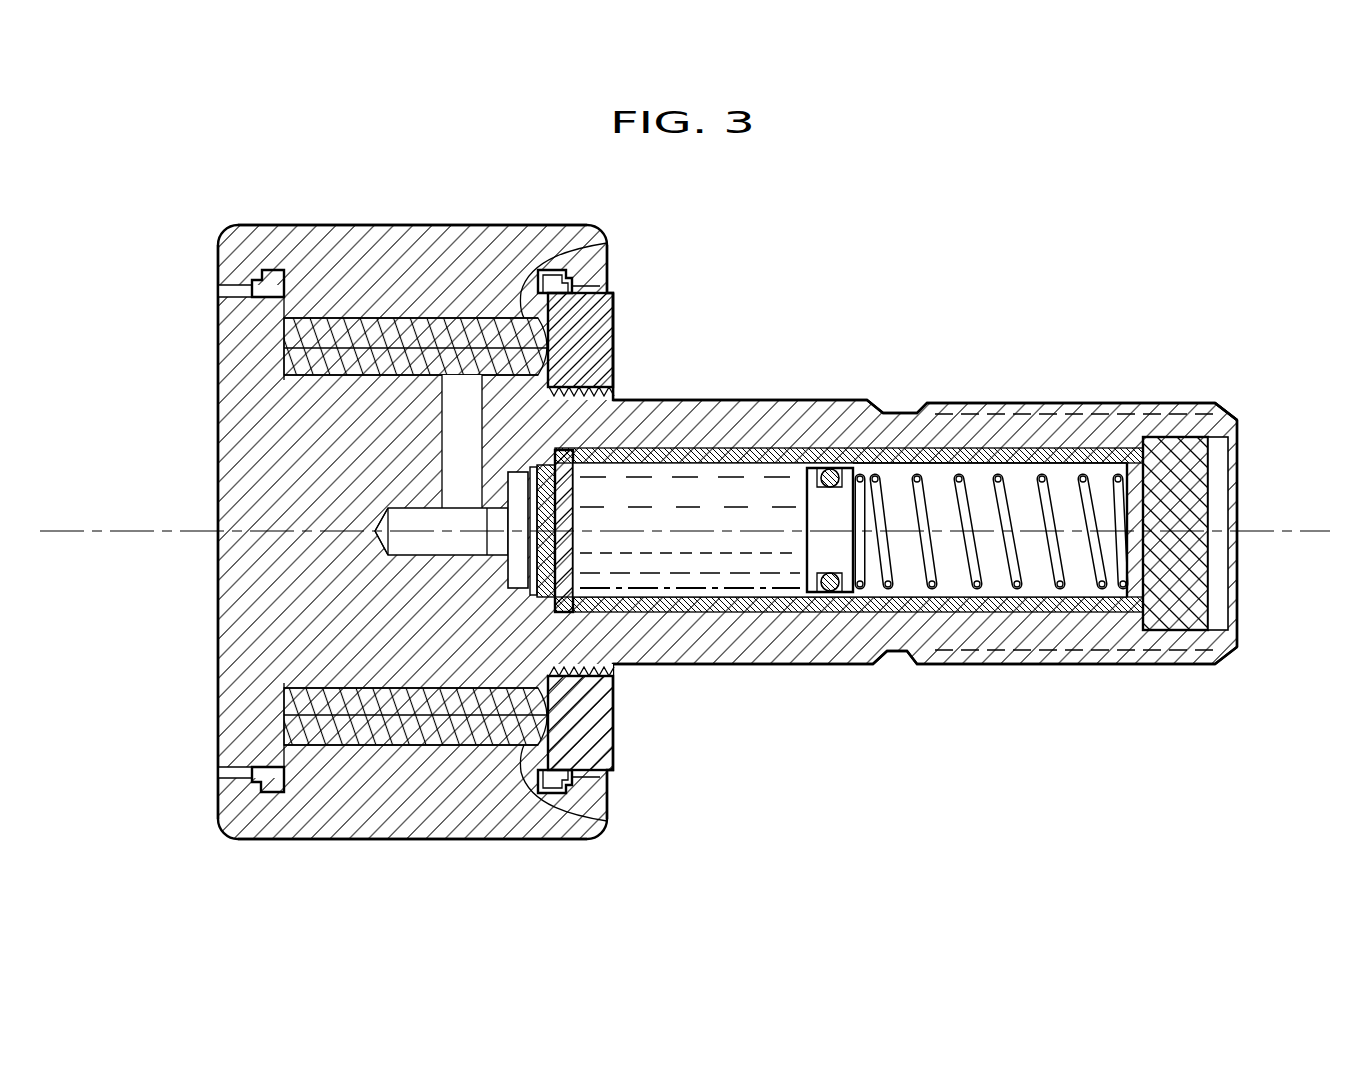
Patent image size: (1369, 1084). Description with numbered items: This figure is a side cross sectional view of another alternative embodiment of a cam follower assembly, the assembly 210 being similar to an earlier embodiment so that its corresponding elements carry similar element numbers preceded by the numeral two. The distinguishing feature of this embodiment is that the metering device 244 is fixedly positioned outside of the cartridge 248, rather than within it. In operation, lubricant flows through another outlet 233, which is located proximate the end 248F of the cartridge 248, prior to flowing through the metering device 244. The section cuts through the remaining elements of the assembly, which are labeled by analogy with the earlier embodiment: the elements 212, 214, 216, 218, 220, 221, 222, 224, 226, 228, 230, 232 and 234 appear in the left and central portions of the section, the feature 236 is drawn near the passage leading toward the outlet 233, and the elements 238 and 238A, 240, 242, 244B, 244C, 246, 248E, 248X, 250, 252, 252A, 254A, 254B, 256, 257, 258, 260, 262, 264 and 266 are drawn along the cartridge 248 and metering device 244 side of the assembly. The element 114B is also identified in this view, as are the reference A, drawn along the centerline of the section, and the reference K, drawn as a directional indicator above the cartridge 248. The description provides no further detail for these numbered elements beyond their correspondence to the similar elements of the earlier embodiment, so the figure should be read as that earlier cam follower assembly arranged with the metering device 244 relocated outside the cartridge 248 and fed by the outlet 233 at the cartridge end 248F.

The actuator assembly 210 is at (950, 223).
The housing body 212 is at (264, 482).
The end face 214 is at (248, 350).
The cylinder portion 216 is at (617, 354).
The annular groove 218 is at (300, 378).
The thread 220 is at (602, 370).
The seal ring face 221 is at (605, 340).
The extension portion 222 is at (617, 318).
The flange 224 is at (283, 232).
The bearing ring 226 is at (336, 230).
The bearing 228 is at (400, 323).
The seal cavity 230 is at (285, 333).
The bearing race 232 is at (433, 333).
The outlet 233 is at (375, 531).
The passage 234 is at (445, 436).
The flow direction 236 is at (463, 388).
The spring 238 is at (965, 602).
The spring end 238A is at (1018, 592).
The piston 240 is at (838, 568).
The sleeve 242 is at (752, 592).
The metering device 244 is at (553, 437).
The pin head 244B is at (543, 600).
The pin collar 244C is at (516, 572).
The plug 246 is at (1197, 607).
The cartridge 248 is at (1108, 600).
The end wall face 248E is at (1137, 570).
The end of the cartridge 248F is at (505, 598).
The threaded portion 248X is at (1000, 455).
The cartridge 250 is at (607, 780).
The seal 252 is at (610, 745).
The seal 252A is at (556, 254).
The seal housing 254A is at (592, 291).
The seal 254B is at (246, 283).
The spring chamber 256 is at (1062, 470).
The chamfer 257 is at (1240, 420).
The outer surface 258 is at (625, 660).
The cylindrical surface 260 is at (620, 392).
The end face 262 is at (1183, 661).
The O-ring 264 is at (829, 467).
The cap 266 is at (1236, 500).
The lip 114B is at (255, 297).
The axis A is at (1250, 531).
The direction K is at (1083, 295).